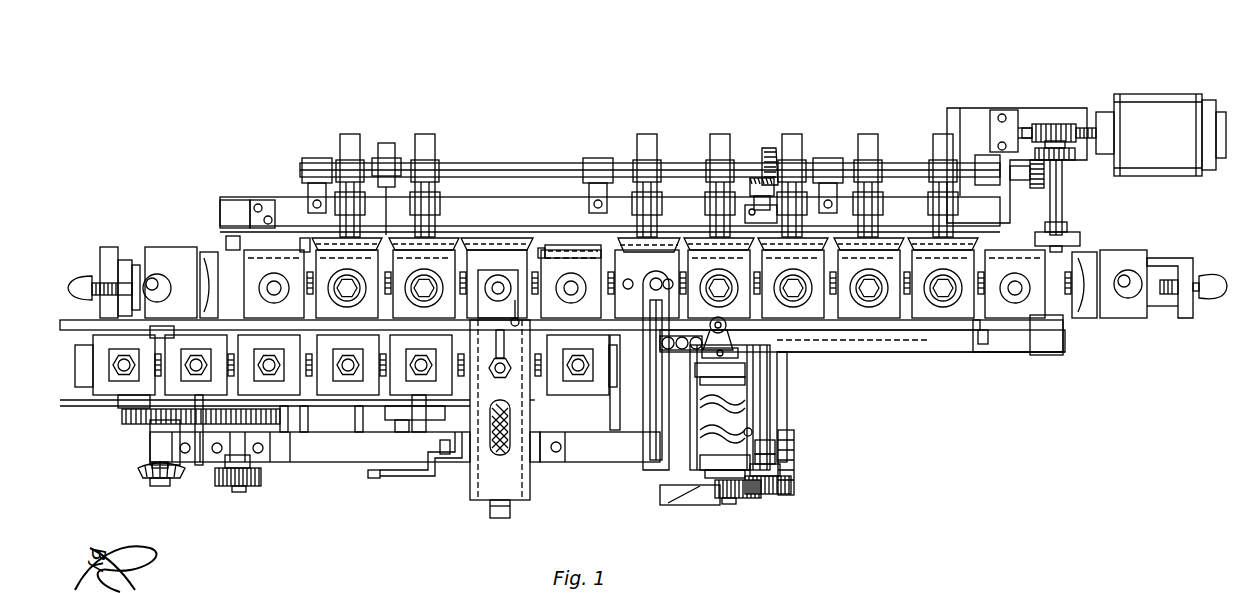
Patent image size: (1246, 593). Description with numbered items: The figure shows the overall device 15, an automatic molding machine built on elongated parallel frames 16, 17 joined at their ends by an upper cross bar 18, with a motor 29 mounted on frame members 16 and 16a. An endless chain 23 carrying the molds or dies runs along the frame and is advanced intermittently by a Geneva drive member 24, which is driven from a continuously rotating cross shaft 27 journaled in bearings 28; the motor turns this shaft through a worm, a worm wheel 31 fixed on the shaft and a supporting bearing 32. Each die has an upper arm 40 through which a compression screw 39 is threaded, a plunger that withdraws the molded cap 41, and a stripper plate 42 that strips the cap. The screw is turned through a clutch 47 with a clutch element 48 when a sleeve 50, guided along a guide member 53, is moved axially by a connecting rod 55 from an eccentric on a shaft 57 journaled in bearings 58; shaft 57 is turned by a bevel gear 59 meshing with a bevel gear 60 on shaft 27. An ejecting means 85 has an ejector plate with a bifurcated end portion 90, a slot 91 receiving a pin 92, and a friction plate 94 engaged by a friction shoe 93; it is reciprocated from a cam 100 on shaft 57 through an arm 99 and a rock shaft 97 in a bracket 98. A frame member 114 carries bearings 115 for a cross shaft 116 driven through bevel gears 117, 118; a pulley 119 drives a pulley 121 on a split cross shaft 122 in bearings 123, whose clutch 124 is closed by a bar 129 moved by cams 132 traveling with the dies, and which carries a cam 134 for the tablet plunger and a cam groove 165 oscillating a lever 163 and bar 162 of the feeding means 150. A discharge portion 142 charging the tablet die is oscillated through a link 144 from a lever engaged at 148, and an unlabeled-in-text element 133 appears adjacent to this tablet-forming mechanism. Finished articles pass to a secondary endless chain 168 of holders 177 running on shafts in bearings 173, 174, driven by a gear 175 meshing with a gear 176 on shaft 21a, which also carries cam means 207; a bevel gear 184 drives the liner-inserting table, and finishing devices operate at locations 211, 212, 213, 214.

The device 15 is at (183, 117).
The elongated parallel frame 16 is at (475, 245).
The frame member 16a is at (1050, 124).
The elongated parallel frame 17 is at (937, 345).
The upper cross bar 18 is at (226, 240).
The shaft 21a is at (230, 232).
The endless chain 23 is at (112, 240).
The Geneva drive member 24 is at (1080, 238).
The cross shaft 27 is at (1062, 180).
The bearings 28 is at (1065, 333).
The motor 29 is at (1155, 100).
The worm wheel 31 is at (1078, 128).
The supporting bearing 32 is at (1000, 128).
The screw 39 is at (1205, 272).
The upper arm 40 is at (292, 270).
The cap 41 is at (200, 360).
The stripper plate 42 is at (660, 268).
The clutch 47 is at (456, 250).
The clutch element 48 is at (562, 273).
The sleeve 50 is at (352, 278).
The guide member 53 is at (310, 248).
The connecting rod 55 is at (347, 170).
The shaft 57 is at (553, 162).
The bearings 58 is at (314, 158).
The bevel gear 59 is at (1038, 188).
The bevel gear 60 is at (1075, 154).
The ejecting means 85 is at (530, 410).
The bifurcated end portion 90 is at (485, 273).
The slot 91 is at (490, 340).
The pin 92 is at (518, 318).
The friction shoe 93 is at (492, 510).
The friction plate 94 is at (498, 432).
The rock shaft 97 is at (378, 468).
The bracket 98 is at (432, 456).
The arm 99 is at (395, 430).
The cam 100 is at (383, 140).
The frame member 114 is at (619, 452).
The bearings 115 is at (780, 462).
The cross shaft 116 is at (775, 432).
The bevel gear 117 is at (755, 178).
The bevel gear 118 is at (772, 148).
The pulley 119 is at (786, 496).
The pulley 121 is at (712, 492).
The cross shaft 122 is at (740, 496).
The bearings 123 is at (710, 458).
The clutch 124 is at (687, 505).
The bar 129 is at (775, 448).
The cams 132 is at (893, 316).
The pin 133 is at (726, 327).
The cam 134 is at (720, 368).
The discharge portion 142 is at (745, 340).
The link 144 is at (770, 378).
The cam groove engagement 148 is at (752, 432).
The feeding means 150 is at (632, 398).
The bar 162 is at (674, 395).
The lever 163 is at (681, 355).
The cam groove 165 is at (760, 405).
The secondary endless chain 168 is at (358, 406).
The bearings 173 is at (548, 445).
The bearings 174 is at (150, 330).
The gear 175 is at (125, 418).
The gear 176 is at (283, 410).
The article holders 177 is at (118, 402).
The bevel gear 184 is at (150, 475).
The cam means 207 is at (256, 486).
The location 211 is at (199, 412).
The location 212 is at (305, 410).
The position 213 is at (358, 412).
The position 214 is at (420, 400).